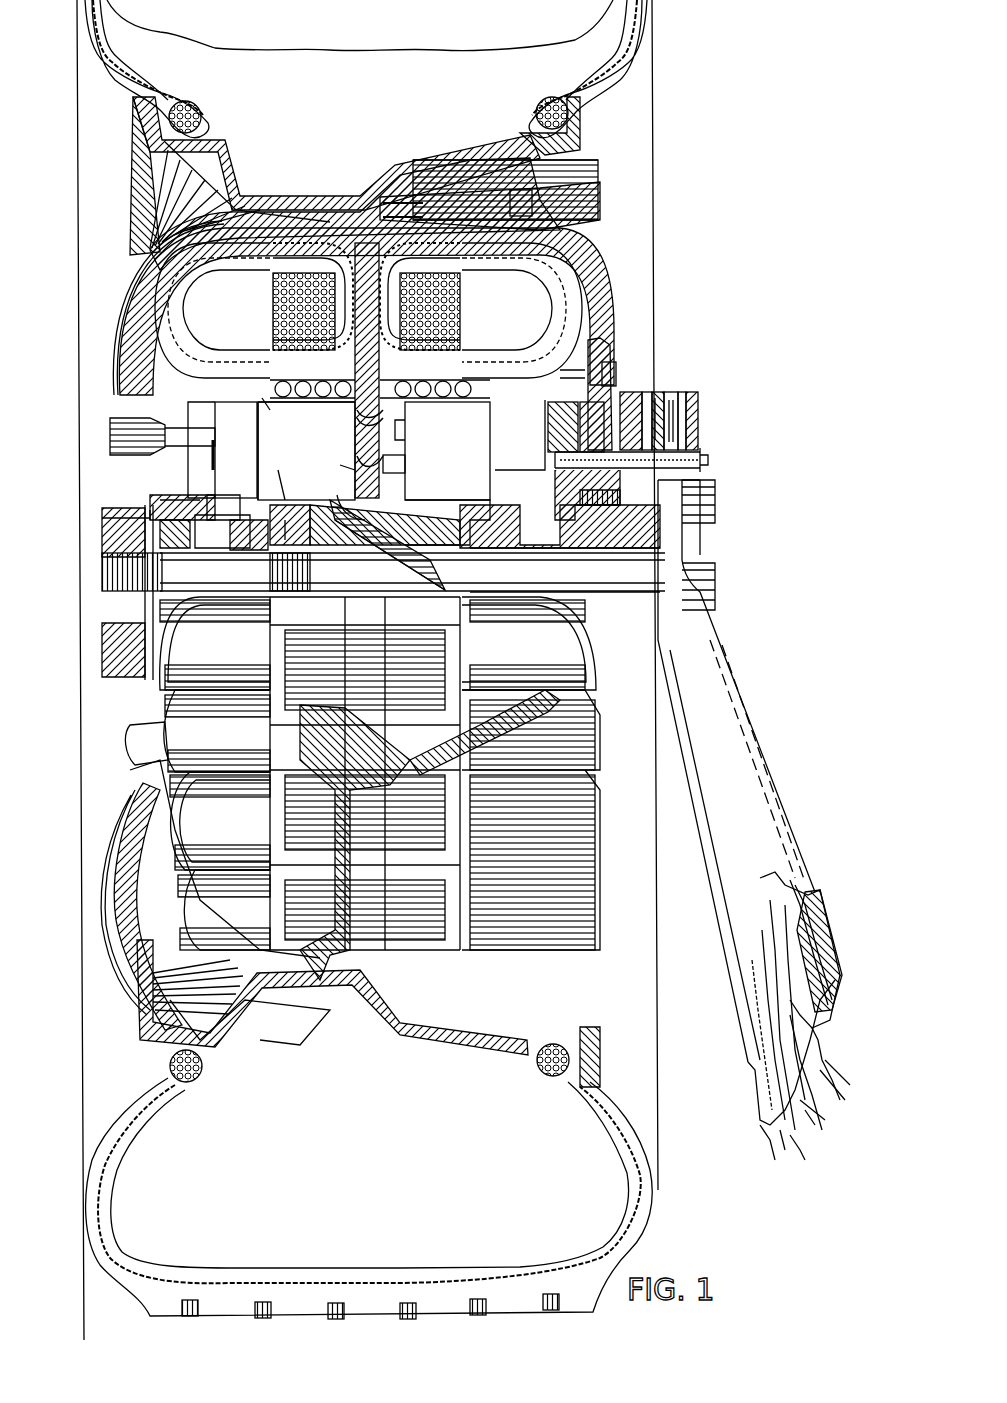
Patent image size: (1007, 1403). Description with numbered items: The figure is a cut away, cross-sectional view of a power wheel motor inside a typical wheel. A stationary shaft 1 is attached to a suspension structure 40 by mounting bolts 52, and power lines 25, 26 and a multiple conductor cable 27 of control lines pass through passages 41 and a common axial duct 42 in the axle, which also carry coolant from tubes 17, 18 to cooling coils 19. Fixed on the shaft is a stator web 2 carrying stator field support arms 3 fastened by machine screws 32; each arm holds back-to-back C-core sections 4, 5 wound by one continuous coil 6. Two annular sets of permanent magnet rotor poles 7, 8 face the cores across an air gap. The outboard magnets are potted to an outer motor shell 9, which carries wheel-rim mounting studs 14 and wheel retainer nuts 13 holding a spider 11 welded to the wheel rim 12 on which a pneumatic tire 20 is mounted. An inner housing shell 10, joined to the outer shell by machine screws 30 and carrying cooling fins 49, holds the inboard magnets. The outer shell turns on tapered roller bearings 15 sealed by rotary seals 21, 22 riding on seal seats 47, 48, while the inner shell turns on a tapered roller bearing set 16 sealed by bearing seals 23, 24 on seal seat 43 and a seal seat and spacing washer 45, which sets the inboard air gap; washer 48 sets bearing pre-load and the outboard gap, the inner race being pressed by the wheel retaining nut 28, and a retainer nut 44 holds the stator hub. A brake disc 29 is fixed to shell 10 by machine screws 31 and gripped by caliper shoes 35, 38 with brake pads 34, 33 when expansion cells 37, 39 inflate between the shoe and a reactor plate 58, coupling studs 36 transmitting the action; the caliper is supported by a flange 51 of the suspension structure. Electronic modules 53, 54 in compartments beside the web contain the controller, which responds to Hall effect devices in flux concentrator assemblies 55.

The stationary shaft 1 is at (102, 578).
The stator web 2 is at (330, 498).
The stator field support arm 3 is at (357, 425).
The C-core section 4 is at (275, 345).
The C-core section 5 is at (458, 350).
The coil 6 is at (273, 297).
The permanent magnet rotor poles 7 is at (212, 596).
The permanent magnet rotor poles 8 is at (531, 595).
The outer motor shell 9 is at (288, 220).
The inner housing shell 10 is at (590, 300).
The spider 11 is at (118, 262).
The wheel rim 12 is at (237, 160).
The wheel retainer nut 13 is at (110, 432).
The wheel-rim mounting stud 14 is at (215, 430).
The tapered roller bearings 15 is at (223, 462).
The tapered roller bearing set 16 is at (500, 560).
The coolant tube 17 is at (822, 1022).
The coolant tube 18 is at (812, 930).
The cooling coils 19 is at (440, 398).
The pneumatic tire 20 is at (635, 64).
The rotary seal 21 is at (160, 500).
The rotary seal 22 is at (248, 500).
The bearing seal 23 is at (480, 500).
The bearing seal 24 is at (555, 475).
The power line 25 is at (835, 1078).
The power line 26 is at (823, 1110).
The multiple conductor cable 27 is at (775, 1128).
The wheel retaining nut 28 is at (102, 636).
The brake disc 29 is at (600, 340).
The machine screws 30 is at (600, 190).
The machine screws 31 is at (615, 372).
The machine screws 32 is at (405, 462).
The brake pad 33 is at (580, 430).
The brake pad 34 is at (628, 392).
The caliper shoe 35 is at (645, 392).
The coupling studs 36 is at (708, 460).
The expansion cell 37 is at (658, 392).
The caliper shoe 38 is at (548, 415).
The expansion cell 39 is at (686, 398).
The suspension structure 40 is at (725, 622).
The passages 41 is at (338, 495).
The common axial duct 42 is at (565, 541).
The seal seat 43 is at (460, 568).
The retainer nut 44 is at (285, 520).
The seal seat and spacing washer 45 is at (545, 565).
The seal seat 47 is at (275, 500).
The seal seat and spacing washer 48 is at (102, 500).
The fins 49 is at (590, 172).
The flange 51 is at (678, 395).
The mounting bolts 52 is at (700, 585).
The electronic module 53 is at (306, 451).
The electronic module 54 is at (442, 451).
The flux concentrator assemblies 55 is at (268, 410).
The reactor plate 58 is at (698, 420).